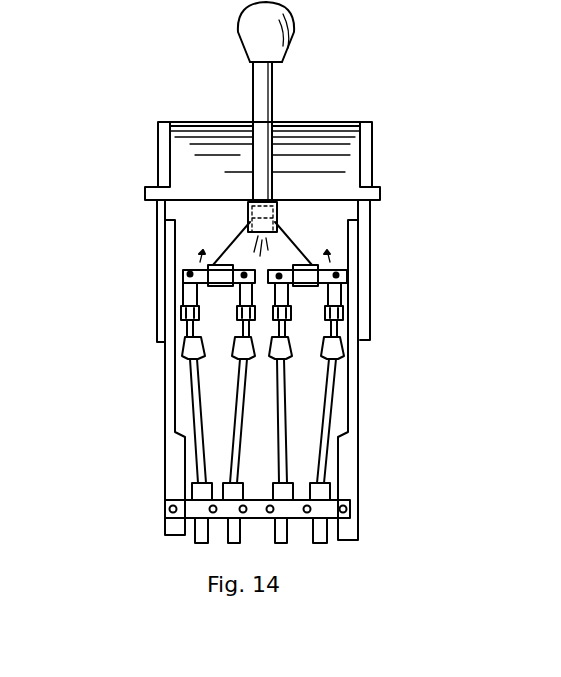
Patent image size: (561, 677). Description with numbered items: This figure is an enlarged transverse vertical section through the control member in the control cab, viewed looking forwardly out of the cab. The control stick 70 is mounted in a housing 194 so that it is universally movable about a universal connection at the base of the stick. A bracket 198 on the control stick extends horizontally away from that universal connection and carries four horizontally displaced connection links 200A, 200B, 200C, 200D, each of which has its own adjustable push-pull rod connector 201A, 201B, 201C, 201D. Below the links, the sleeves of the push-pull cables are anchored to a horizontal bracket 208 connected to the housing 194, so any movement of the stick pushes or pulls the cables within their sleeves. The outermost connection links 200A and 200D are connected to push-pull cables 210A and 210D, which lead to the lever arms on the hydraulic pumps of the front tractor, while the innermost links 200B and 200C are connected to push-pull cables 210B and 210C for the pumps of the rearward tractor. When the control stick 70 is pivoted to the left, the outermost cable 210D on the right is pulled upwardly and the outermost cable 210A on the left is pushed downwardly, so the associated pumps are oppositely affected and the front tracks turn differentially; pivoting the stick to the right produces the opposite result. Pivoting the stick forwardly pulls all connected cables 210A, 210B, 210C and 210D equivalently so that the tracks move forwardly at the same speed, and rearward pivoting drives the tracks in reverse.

The control stick 70 is at (198, 70).
The housing 194 is at (370, 254).
The bracket 198 is at (285, 248).
The connection link 200A is at (185, 305).
The connection link 200B is at (245, 292).
The connection link 200C is at (345, 281).
The connection link 200D is at (285, 298).
The adjustable push-pull rod connector 201A is at (181, 313).
The adjustable push-pull rod connector 201B is at (237, 315).
The adjustable push-pull rod connector 201C is at (291, 315).
The adjustable push-pull rod connector 201D is at (343, 316).
The horizontal bracket 208 is at (304, 498).
The push-pull cable 210A is at (196, 393).
The push-pull cable 210B is at (238, 427).
The push-pull cable 210C is at (290, 402).
The push-pull cable 210D is at (335, 373).